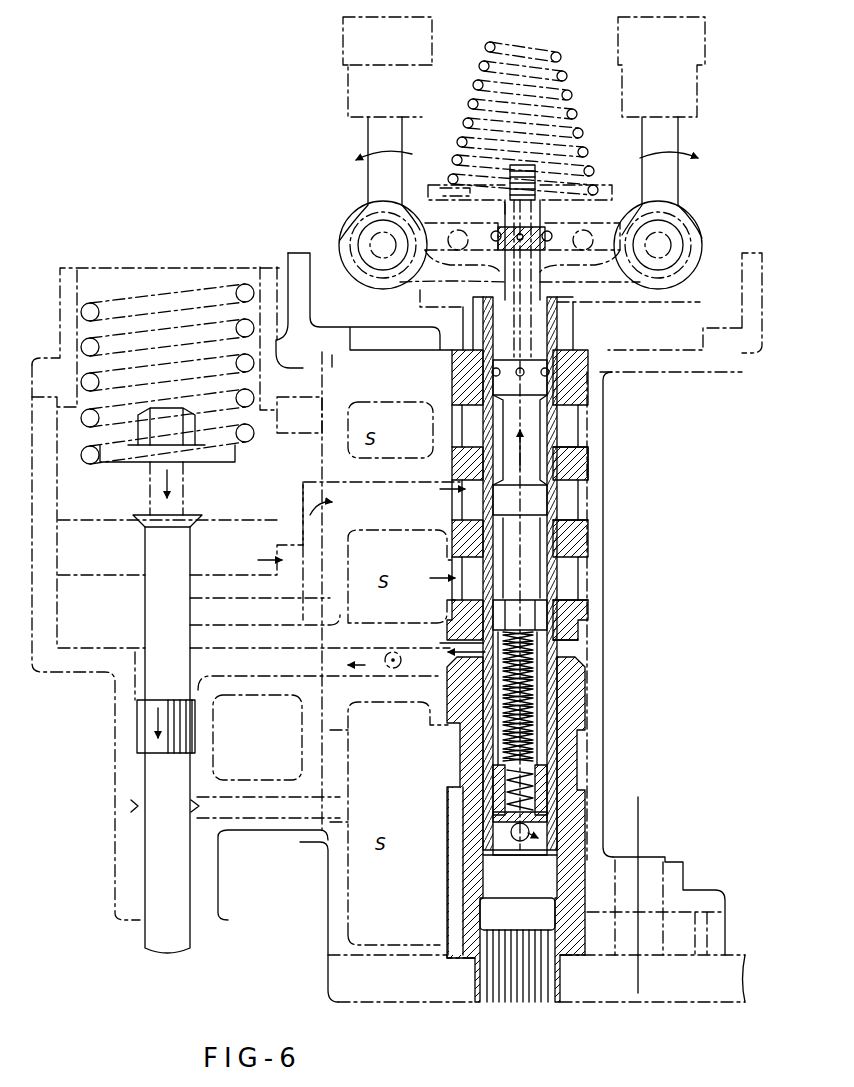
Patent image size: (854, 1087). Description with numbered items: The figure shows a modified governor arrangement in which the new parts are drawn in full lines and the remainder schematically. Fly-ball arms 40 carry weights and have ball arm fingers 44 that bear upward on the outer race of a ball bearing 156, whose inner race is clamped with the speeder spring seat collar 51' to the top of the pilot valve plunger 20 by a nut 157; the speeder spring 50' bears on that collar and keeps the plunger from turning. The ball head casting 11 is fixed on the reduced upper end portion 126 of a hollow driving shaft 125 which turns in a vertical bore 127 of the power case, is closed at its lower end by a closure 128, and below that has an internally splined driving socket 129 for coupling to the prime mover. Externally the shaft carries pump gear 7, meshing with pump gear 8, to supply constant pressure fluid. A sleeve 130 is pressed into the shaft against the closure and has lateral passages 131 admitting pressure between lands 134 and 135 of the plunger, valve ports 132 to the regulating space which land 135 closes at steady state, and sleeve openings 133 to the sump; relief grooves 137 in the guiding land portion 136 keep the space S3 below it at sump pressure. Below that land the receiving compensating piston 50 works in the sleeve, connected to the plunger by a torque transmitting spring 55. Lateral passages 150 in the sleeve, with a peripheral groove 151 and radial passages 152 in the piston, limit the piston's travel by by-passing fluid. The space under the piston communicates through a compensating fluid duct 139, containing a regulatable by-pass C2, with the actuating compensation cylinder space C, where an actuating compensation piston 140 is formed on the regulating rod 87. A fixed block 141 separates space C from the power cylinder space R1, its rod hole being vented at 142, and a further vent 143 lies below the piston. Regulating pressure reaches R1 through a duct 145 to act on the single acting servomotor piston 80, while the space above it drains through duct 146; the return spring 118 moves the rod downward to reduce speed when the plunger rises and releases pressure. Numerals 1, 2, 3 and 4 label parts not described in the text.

The ball arms 40 is at (368, 150).
The nut 157 is at (508, 168).
The speeder spring 50' is at (524, 118).
The spring seat collar 51' is at (527, 179).
The ball arm fingers 44 is at (430, 298).
The ball bearing 156 is at (548, 232).
The head casting 11 is at (628, 293).
The reduced upper end portion 126 is at (560, 322).
The post 4 is at (292, 250).
The pilot valve plunger 20 is at (612, 398).
The land 134 is at (520, 377).
The lateral passages 131 is at (490, 428).
The land 135 is at (520, 500).
The vertical relief grooves 137 is at (520, 612).
The openings 132 is at (485, 500).
The sleeve 130 is at (588, 462).
The vertical cylindrical bore 127 is at (592, 512).
The sleeve openings 133 is at (566, 575).
The plunger-guiding land portion 136 is at (592, 603).
The hollow driving shaft 125 is at (590, 630).
The pump gear 7 is at (452, 928).
The closure 128 is at (520, 871).
The driving socket 129 is at (555, 988).
The base 1 is at (545, 978).
The pump gear 8 is at (700, 925).
The housing 2 is at (326, 894).
The spring 55 is at (535, 717).
The space S3 is at (535, 691).
The lateral passages 150 is at (548, 778).
The peripheral groove 151 is at (540, 798).
The radial passages 152 is at (495, 800).
The receiving compensating piston 50 is at (569, 826).
The casing 3 is at (66, 674).
The return spring 118 is at (82, 345).
The duct 146 is at (296, 440).
The single acting piston 80 is at (169, 464).
The control rod 87 is at (144, 560).
The fixed block 141 is at (101, 611).
The sump vent 142 is at (325, 565).
The duct 145 is at (300, 568).
The power piston cylinder space R1 is at (250, 558).
The compensating fluid duct 139 is at (319, 671).
The secondary compensation by-pass C2 is at (392, 668).
The actuating compensating piston cylinder space C is at (140, 686).
The actuating compensation piston 140 is at (145, 735).
The sump vent 143 is at (198, 806).